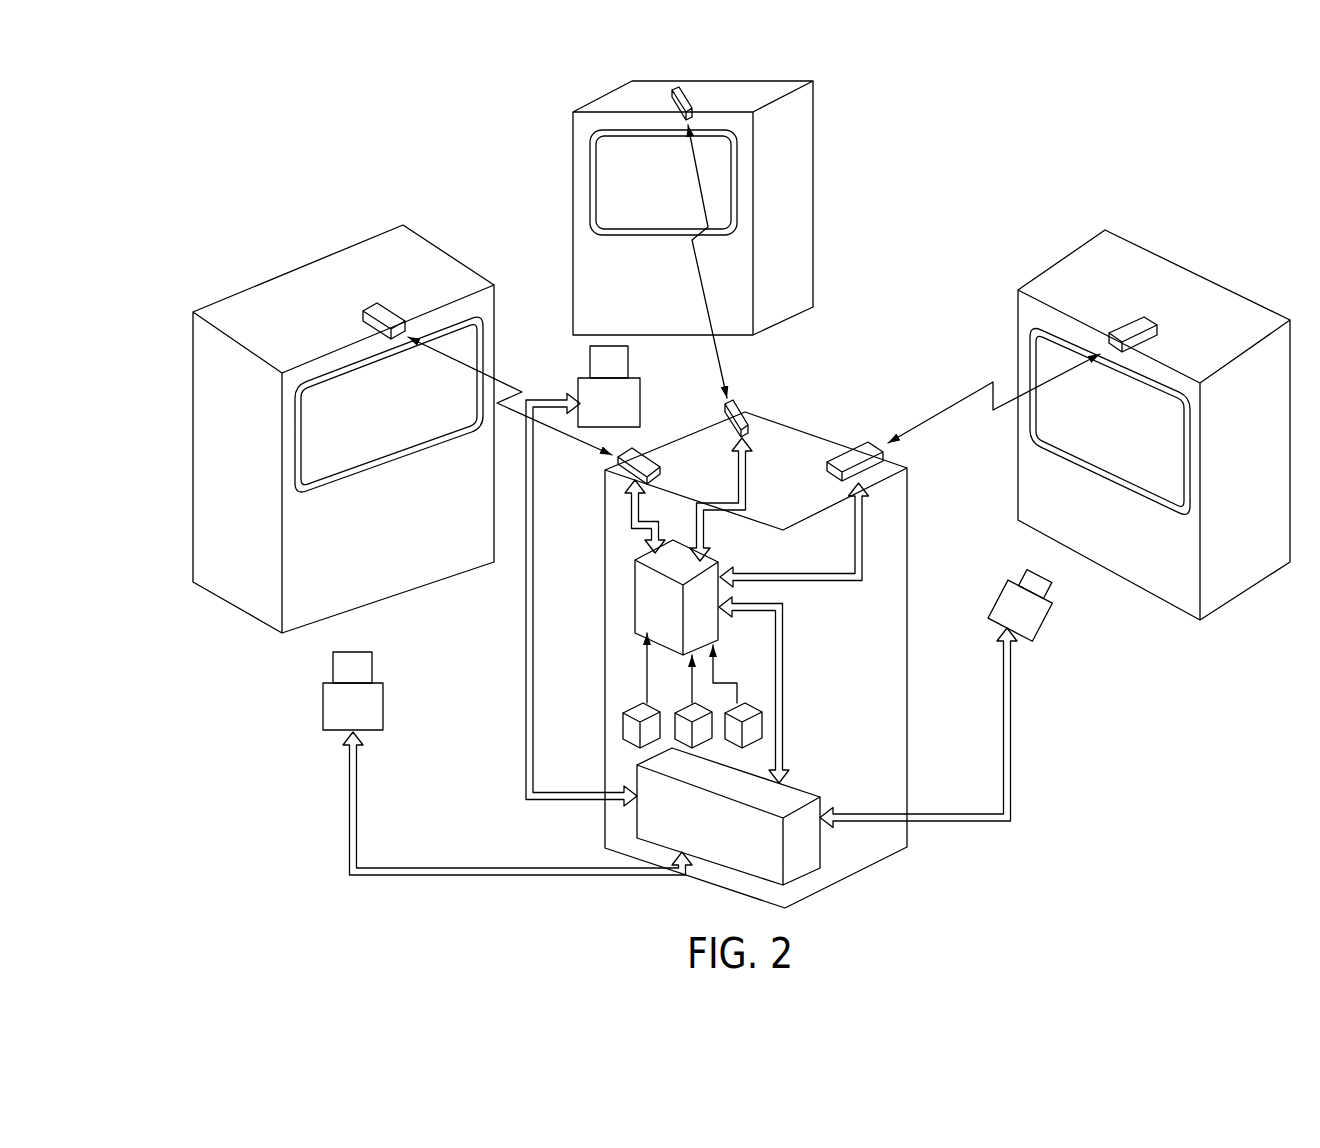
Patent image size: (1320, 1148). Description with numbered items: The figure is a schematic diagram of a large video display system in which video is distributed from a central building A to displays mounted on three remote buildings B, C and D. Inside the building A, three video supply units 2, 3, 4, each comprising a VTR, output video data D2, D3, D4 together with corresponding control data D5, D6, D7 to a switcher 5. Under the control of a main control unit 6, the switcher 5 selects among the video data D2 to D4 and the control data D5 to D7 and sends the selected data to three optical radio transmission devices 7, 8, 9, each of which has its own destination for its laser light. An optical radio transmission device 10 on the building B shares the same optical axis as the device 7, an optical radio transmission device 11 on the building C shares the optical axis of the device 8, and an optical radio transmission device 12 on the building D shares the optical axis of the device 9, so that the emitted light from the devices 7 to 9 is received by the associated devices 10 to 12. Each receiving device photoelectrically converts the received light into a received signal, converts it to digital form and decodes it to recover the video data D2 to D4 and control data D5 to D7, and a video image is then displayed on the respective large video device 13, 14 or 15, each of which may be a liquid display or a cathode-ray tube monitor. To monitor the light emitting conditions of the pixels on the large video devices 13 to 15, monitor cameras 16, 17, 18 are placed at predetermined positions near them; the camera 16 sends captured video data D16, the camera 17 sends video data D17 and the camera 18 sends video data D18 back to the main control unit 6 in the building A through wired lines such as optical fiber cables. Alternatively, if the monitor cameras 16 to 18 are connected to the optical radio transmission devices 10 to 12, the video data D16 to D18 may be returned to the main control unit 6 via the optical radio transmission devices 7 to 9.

The video supply unit 2 is at (624, 740).
The video supply unit 3 is at (698, 746).
The video supply unit 4 is at (742, 745).
The switcher 5 is at (722, 560).
The main control unit 6 is at (805, 782).
The optical radio transmission device 7 is at (637, 442).
The optical radio transmission device 8 is at (750, 406).
The optical radio transmission device 9 is at (886, 450).
The optical radio transmission device 10 is at (386, 302).
The optical radio transmission device 11 is at (695, 97).
The optical radio transmission device 12 is at (1159, 331).
The large video device 13 is at (304, 497).
The large video device 14 is at (724, 246).
The large video device 15 is at (1156, 511).
The monitor camera 16 is at (384, 706).
The monitor camera 17 is at (643, 382).
The monitor camera 18 is at (1052, 632).
The video data D2 is at (628, 668).
The video data D3 is at (671, 679).
The video data D4 is at (754, 690).
The control data D5 is at (646, 700).
The control data D6 is at (690, 700).
The control data D7 is at (728, 688).
The video data D16 is at (460, 868).
The video data D17 is at (526, 645).
The video data D18 is at (1012, 737).
The building A is at (756, 660).
The building B is at (343, 429).
The building C is at (693, 208).
The building D is at (1154, 425).